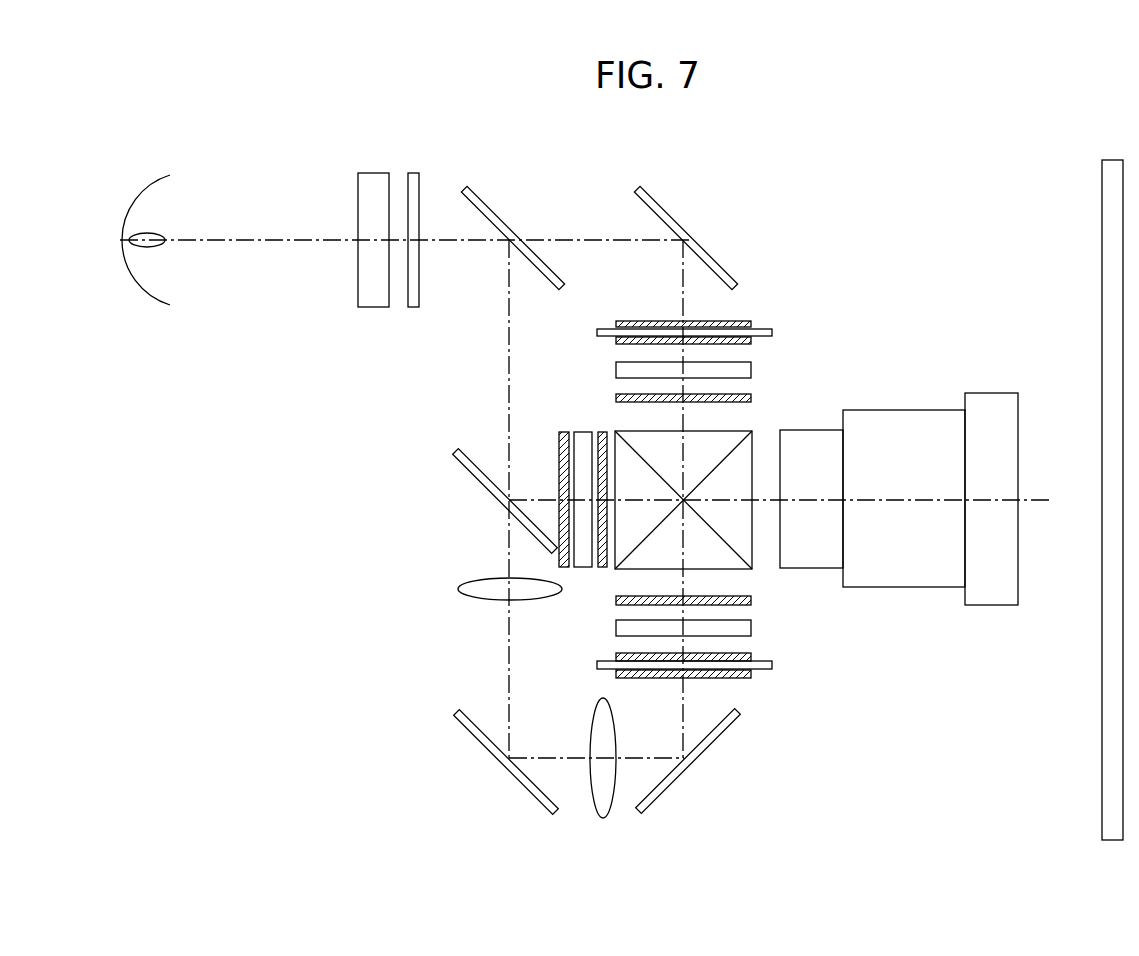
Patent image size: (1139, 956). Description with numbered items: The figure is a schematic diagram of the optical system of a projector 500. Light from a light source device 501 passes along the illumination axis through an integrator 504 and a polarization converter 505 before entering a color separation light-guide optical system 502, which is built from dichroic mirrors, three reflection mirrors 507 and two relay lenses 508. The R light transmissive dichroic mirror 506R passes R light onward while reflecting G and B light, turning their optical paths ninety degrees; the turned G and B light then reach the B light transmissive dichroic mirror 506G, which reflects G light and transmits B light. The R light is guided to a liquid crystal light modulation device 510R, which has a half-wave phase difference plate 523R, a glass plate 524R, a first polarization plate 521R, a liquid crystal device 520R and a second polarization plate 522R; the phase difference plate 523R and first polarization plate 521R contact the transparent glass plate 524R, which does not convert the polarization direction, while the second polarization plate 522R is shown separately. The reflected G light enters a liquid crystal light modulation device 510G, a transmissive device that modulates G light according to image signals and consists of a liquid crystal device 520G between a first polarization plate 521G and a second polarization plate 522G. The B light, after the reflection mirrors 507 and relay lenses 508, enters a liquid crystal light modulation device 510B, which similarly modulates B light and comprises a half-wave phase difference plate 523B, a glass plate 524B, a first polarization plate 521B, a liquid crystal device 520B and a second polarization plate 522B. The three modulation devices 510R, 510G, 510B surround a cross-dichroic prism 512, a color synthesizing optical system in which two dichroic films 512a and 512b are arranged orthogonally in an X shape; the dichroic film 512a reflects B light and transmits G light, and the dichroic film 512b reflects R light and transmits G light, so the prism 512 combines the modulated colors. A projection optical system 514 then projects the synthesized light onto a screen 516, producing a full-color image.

The projector 500 is at (940, 115).
The light source device 501 is at (113, 298).
The color separation light-guide optical system 502 is at (738, 168).
The integrator 504 is at (370, 175).
The polarization converter 505 is at (412, 175).
The R light transmissive dichroic mirror 506R is at (490, 212).
The B light transmissive dichroic mirror 506G is at (470, 470).
The reflection mirror 507 is at (662, 212).
The relay lens 508 is at (470, 587).
The liquid crystal light modulation device for R light 510R is at (764, 331).
The liquid crystal light modulation device for G light 510G is at (479, 564).
The liquid crystal light modulation device for B light 510B is at (764, 668).
The cross-dichroic prism 512 is at (684, 502).
The dichroic film 512a is at (725, 431).
The dichroic film 512b is at (642, 452).
The projection optical system 514 is at (992, 597).
The screen 516 is at (1112, 160).
The liquid crystal device 520R is at (742, 370).
The liquid crystal device 520G is at (583, 569).
The liquid crystal device 520B is at (745, 628).
The first polarization plate 521R is at (755, 340).
The first polarization plate 521G is at (563, 569).
The first polarization plate 521B is at (747, 658).
The second polarization plate 522R is at (745, 398).
The second polarization plate 522G is at (603, 569).
The second polarization plate 522B is at (750, 600).
The λ/2 phase difference plate 523R is at (742, 321).
The λ/2 phase difference plate 523B is at (737, 679).
The glass plate 524R is at (758, 330).
The glass plate 524B is at (757, 666).